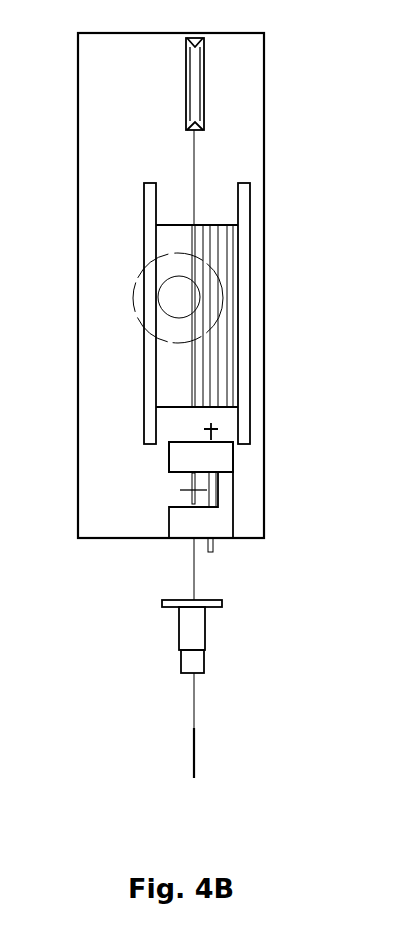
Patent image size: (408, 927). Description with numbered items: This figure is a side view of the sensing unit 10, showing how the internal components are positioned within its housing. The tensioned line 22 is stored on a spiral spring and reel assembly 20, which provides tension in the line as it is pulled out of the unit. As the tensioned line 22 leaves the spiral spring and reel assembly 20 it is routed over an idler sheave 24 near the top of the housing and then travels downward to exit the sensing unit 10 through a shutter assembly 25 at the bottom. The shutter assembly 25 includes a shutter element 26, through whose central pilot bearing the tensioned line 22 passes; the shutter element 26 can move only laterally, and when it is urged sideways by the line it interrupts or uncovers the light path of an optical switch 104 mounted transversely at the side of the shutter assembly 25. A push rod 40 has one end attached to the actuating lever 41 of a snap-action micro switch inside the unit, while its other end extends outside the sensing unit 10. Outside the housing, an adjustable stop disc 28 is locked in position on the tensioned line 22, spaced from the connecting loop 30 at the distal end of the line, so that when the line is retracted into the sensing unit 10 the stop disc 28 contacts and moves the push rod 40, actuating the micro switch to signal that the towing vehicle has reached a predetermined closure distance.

The sensing unit 10 is at (120, 27).
The spiral spring and reel assembly 20 is at (148, 183).
The tensioned line 22 is at (198, 710).
The idler sheave 24 is at (207, 62).
The shutter assembly 25 is at (164, 517).
The shutter element 26 is at (180, 490).
The adjustable stop disc 28 is at (207, 632).
The connecting loop 30 is at (198, 745).
The push rod 40 is at (212, 555).
The actuating lever 41 is at (226, 428).
The optical switch 104 is at (168, 463).